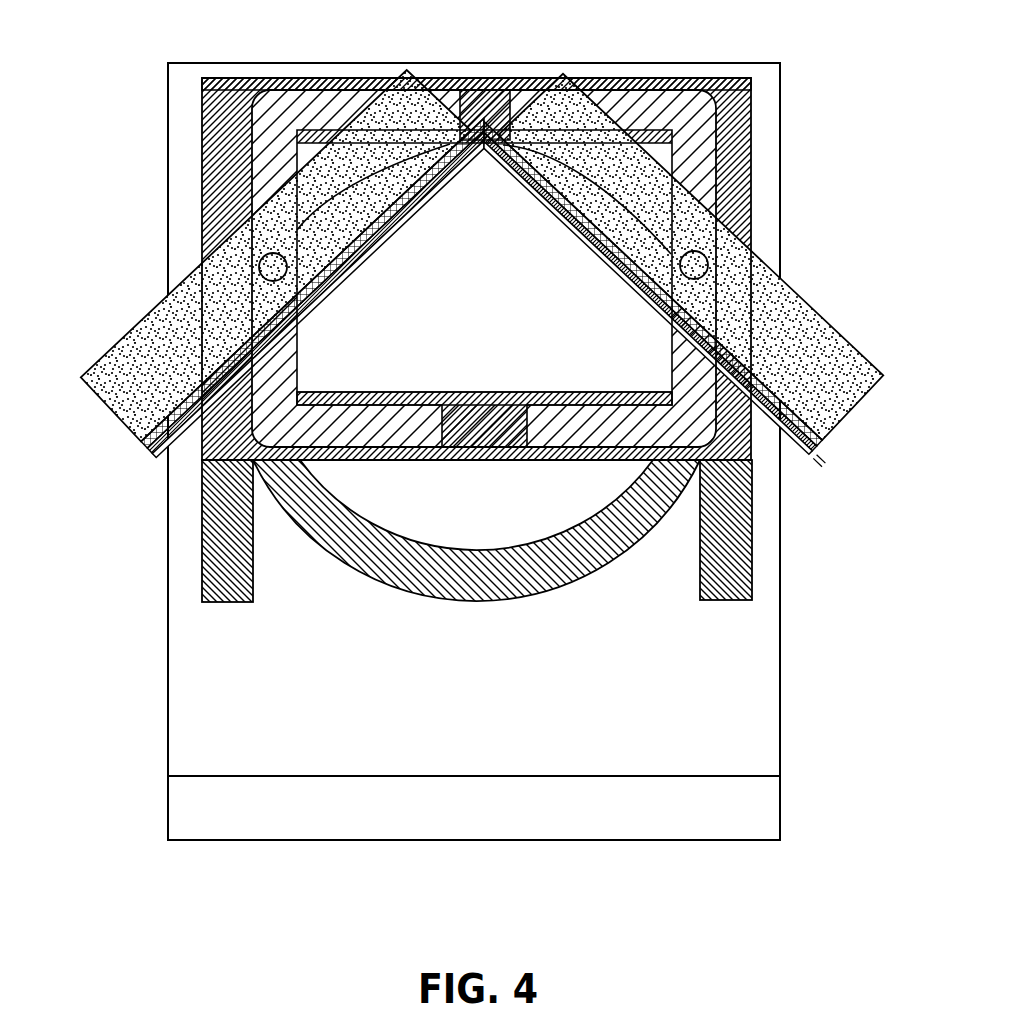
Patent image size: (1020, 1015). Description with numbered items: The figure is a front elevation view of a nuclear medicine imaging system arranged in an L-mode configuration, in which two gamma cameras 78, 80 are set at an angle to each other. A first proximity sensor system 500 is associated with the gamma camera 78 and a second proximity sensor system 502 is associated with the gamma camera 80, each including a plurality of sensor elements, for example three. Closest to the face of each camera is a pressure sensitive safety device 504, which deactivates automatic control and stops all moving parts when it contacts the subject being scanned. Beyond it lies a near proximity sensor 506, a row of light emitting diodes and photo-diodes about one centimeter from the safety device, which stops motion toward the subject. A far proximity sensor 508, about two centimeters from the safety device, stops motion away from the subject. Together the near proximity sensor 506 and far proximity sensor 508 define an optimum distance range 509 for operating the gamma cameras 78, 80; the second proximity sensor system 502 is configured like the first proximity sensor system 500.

The gamma camera 78 is at (113, 362).
The gamma camera 80 is at (853, 362).
The first proximity sensor system 500 is at (272, 325).
The second proximity sensor system 502 is at (625, 312).
The pressure sensitive safety device 504 is at (148, 447).
The near proximity sensor 506 is at (150, 455).
The far proximity sensor 508 is at (158, 460).
The optimum distance range 509 is at (797, 488).